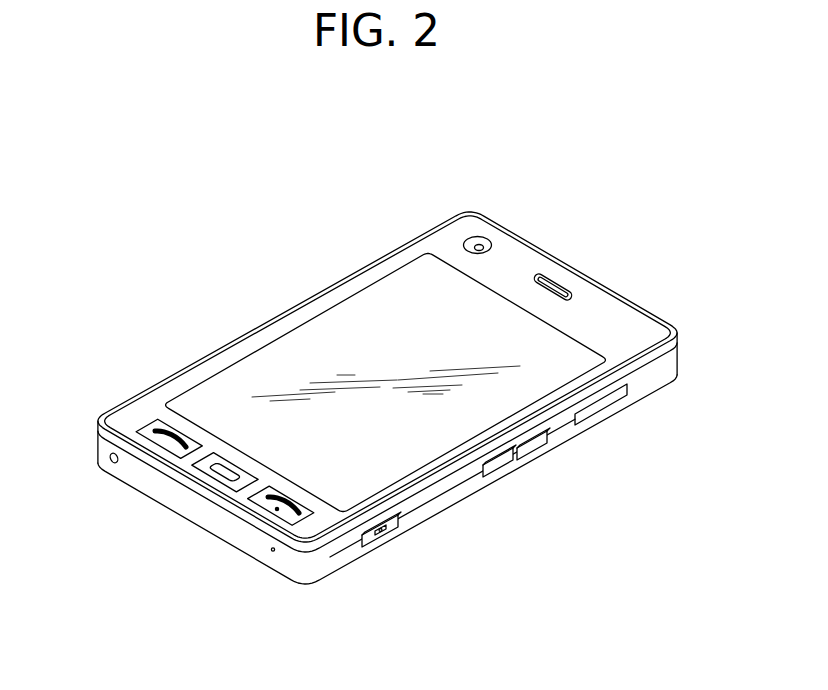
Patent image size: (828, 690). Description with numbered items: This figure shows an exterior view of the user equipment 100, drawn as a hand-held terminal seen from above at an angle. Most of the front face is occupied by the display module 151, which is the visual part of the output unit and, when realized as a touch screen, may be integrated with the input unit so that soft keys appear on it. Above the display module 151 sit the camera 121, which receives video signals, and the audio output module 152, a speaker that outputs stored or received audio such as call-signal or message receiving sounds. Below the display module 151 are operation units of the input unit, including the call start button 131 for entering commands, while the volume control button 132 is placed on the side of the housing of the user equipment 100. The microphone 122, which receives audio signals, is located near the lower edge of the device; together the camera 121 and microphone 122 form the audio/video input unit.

The user equipment 100 is at (283, 266).
The camera 121 is at (481, 245).
The microphone 122 is at (271, 552).
The call start button 131 is at (148, 434).
The volume control button 132 is at (500, 460).
The display module 151 is at (265, 362).
The audio output module 152 is at (552, 282).